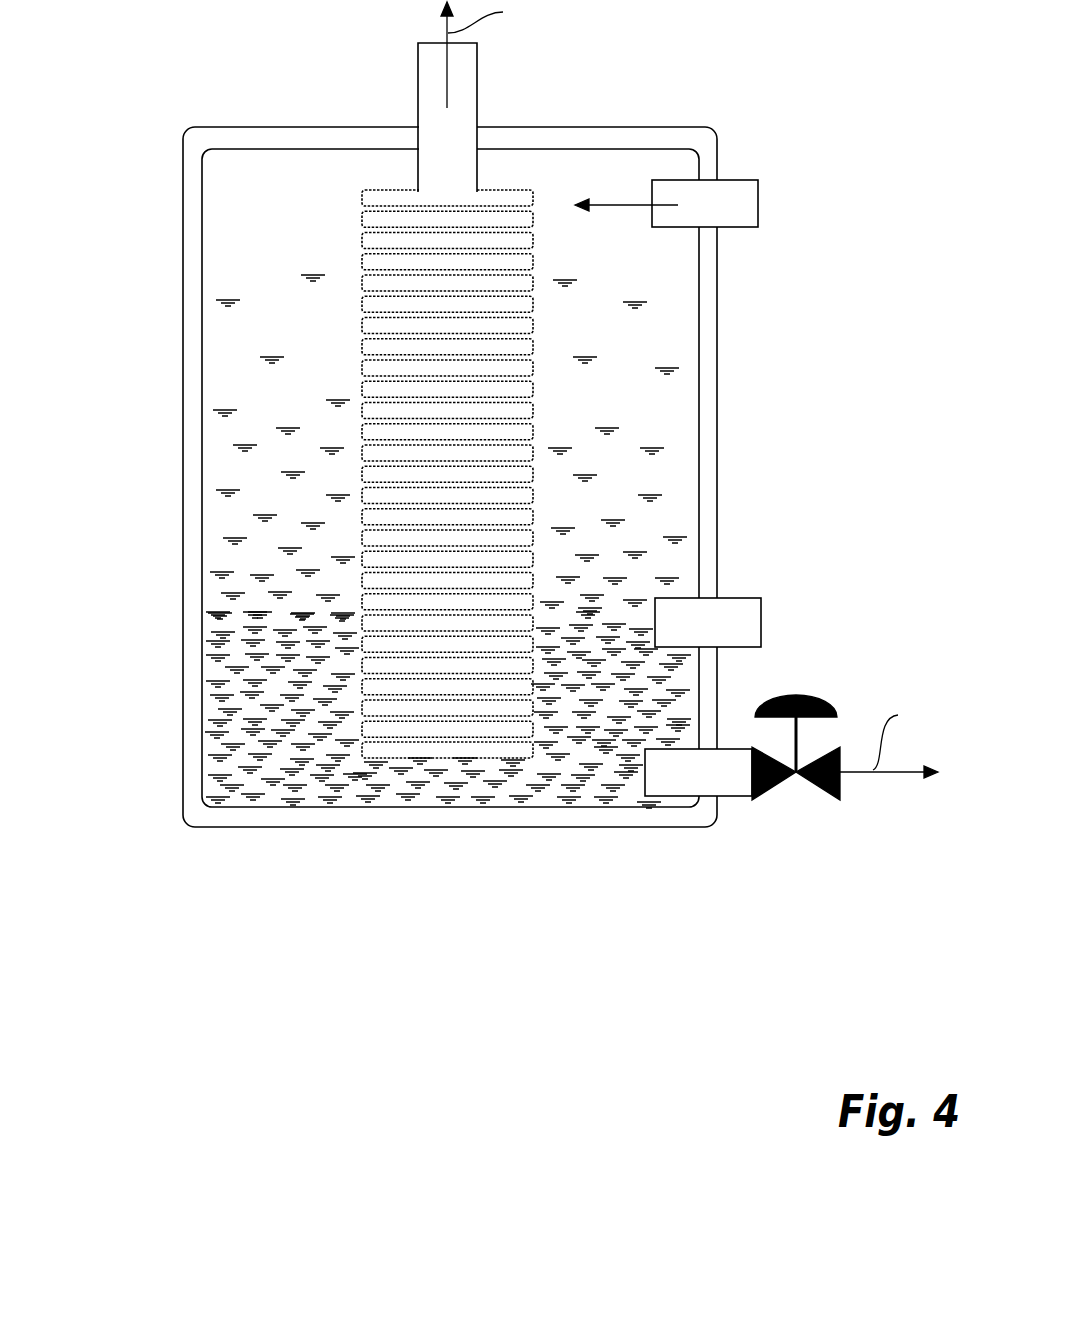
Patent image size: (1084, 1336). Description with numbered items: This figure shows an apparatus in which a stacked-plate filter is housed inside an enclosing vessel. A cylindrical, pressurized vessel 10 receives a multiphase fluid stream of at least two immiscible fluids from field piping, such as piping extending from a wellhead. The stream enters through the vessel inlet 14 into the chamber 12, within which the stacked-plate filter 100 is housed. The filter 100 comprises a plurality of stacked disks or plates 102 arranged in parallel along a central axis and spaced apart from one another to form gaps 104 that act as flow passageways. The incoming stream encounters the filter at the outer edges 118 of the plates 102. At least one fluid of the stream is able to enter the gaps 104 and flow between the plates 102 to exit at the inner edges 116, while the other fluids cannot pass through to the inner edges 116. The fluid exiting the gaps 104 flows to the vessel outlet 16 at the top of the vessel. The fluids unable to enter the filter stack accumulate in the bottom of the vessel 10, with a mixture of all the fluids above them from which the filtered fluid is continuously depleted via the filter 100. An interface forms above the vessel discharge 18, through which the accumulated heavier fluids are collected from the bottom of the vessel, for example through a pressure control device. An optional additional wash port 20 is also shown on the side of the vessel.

The pressurized vessel 10 is at (720, 157).
The chamber 12 is at (212, 612).
The vessel inlet 14 is at (740, 220).
The vessel outlet 16 is at (425, 85).
The vessel discharge 18 is at (718, 783).
The wash port 20 is at (755, 625).
The stacked-plate filter 100 is at (560, 553).
The stacked plates 102 is at (363, 367).
The gaps 104 is at (363, 547).
The inner edges 116 is at (418, 477).
The outer edges 118 is at (533, 366).